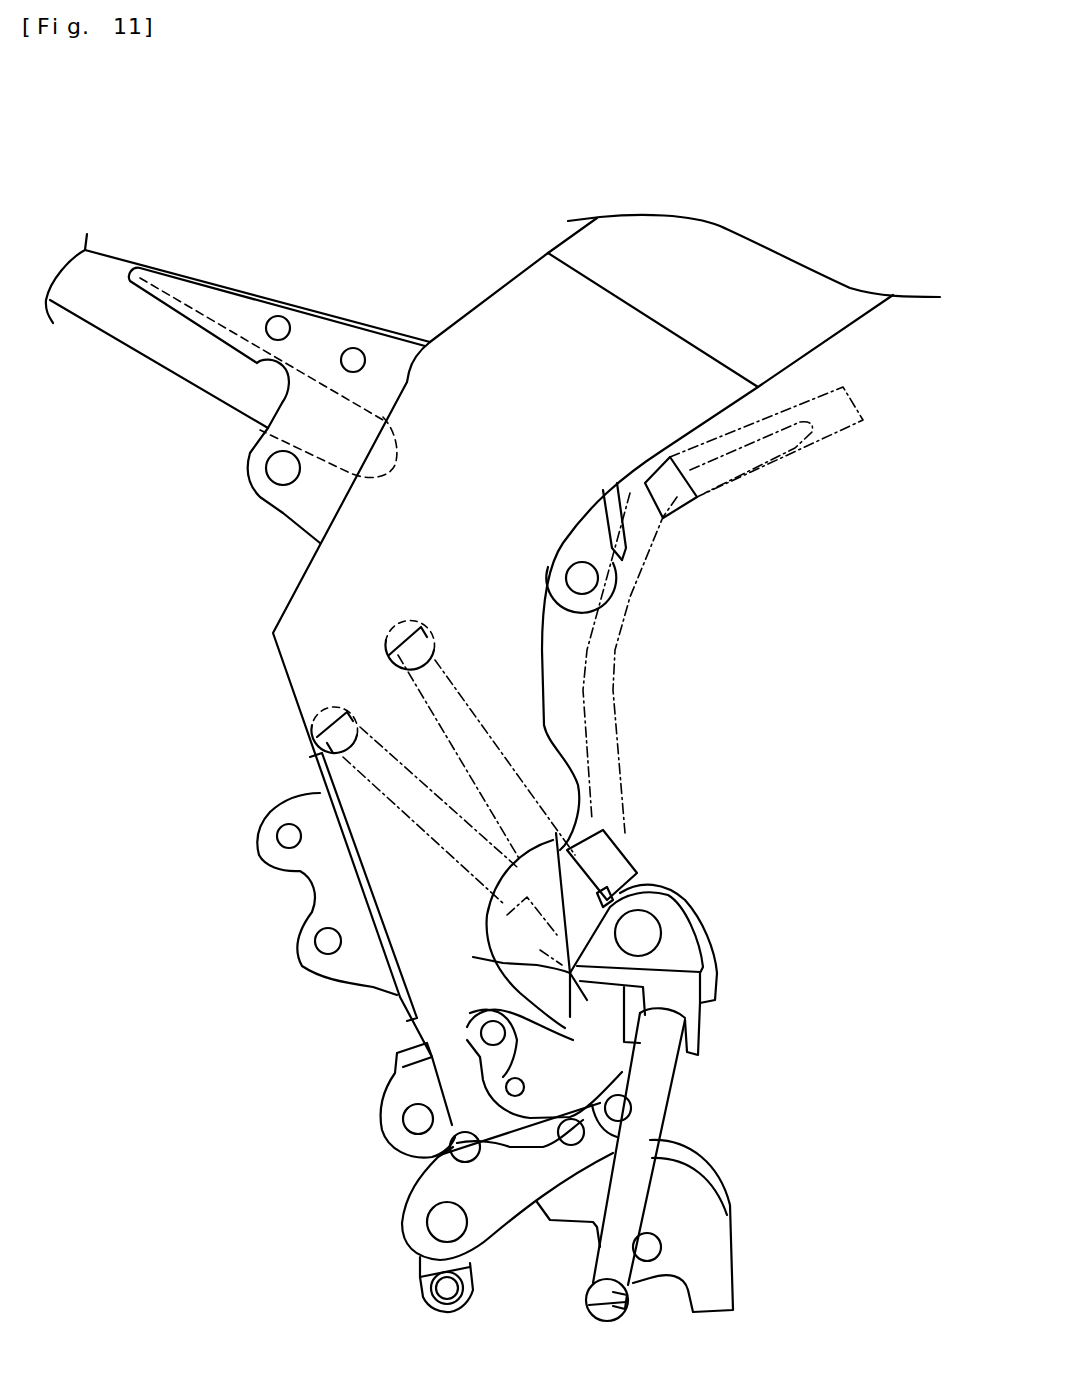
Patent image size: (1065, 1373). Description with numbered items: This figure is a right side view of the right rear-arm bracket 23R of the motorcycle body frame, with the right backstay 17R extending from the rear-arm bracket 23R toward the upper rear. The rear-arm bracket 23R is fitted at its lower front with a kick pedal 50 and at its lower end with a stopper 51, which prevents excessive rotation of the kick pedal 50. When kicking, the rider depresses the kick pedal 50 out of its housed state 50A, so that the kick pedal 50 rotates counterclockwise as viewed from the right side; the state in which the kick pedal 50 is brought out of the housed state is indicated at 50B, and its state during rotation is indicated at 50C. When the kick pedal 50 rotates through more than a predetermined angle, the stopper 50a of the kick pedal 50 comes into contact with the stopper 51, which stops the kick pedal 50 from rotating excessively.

The right backstay 17R is at (135, 330).
The right rear-arm bracket 23R is at (317, 587).
The kick pedal 50 is at (657, 1127).
The housed state of the kick pedal 50A is at (635, 600).
The state of the kick pedal brought out of the housed state 50B is at (447, 682).
The state of the kick pedal during rotation 50C is at (347, 767).
The stopper of the kick pedal 50a is at (495, 963).
The stopper 51 is at (427, 1033).